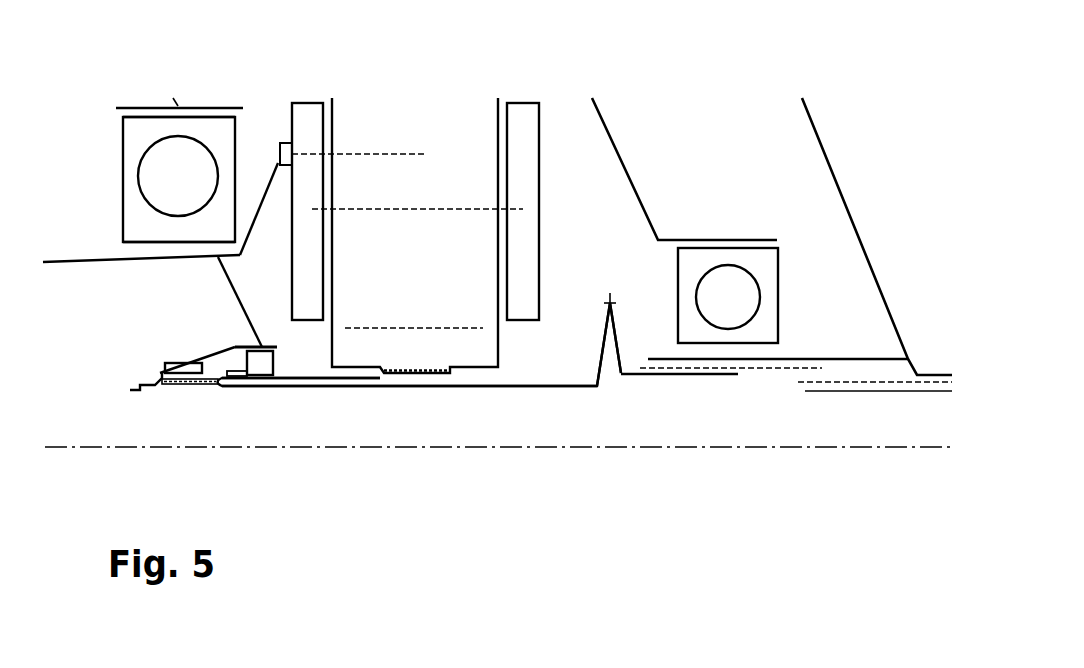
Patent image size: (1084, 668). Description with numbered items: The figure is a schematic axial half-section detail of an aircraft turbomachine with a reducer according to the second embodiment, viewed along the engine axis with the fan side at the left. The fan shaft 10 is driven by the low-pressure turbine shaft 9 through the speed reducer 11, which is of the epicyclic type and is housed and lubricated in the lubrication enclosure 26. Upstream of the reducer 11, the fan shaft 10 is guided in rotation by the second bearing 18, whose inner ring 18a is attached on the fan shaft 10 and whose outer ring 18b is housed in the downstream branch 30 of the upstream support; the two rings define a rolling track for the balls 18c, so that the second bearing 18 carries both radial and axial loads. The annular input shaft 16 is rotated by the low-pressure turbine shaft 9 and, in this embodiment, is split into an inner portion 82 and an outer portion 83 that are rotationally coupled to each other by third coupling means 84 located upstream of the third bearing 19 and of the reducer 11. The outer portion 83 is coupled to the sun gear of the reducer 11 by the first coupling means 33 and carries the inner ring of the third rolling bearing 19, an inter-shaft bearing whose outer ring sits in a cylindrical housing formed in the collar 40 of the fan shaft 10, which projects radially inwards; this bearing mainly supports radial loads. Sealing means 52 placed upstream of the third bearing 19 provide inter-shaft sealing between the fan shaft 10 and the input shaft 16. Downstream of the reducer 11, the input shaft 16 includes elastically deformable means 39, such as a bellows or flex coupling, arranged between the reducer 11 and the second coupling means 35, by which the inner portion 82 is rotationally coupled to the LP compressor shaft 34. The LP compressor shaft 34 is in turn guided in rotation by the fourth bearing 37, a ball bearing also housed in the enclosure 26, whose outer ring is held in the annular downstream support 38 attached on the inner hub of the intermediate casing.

The low-pressure shaft 9 is at (930, 391).
The fan shaft 10 is at (70, 262).
The speed reducer 11 is at (393, 123).
The input shaft 16 is at (526, 388).
The second bearing 18 is at (50, 288).
The inner ring 18a is at (150, 122).
The outer ring 18b is at (147, 227).
The rolling elements 18c is at (203, 157).
The third rolling bearing 19 is at (282, 360).
The lubrication enclosure 26 is at (606, 223).
The downstream branch 30 is at (208, 108).
The first coupling means 33 is at (418, 376).
The LP compressor shaft 34 is at (850, 358).
The second coupling means 35 is at (688, 377).
The fourth bearing 37 is at (782, 280).
The downstream support 38 is at (635, 187).
The elastically deformable means 39 is at (600, 353).
The collar 40 is at (235, 292).
The sealing means 52 is at (153, 367).
The inner portion 82 is at (360, 386).
The outer portion 83 is at (325, 378).
The third coupling means 84 is at (185, 385).